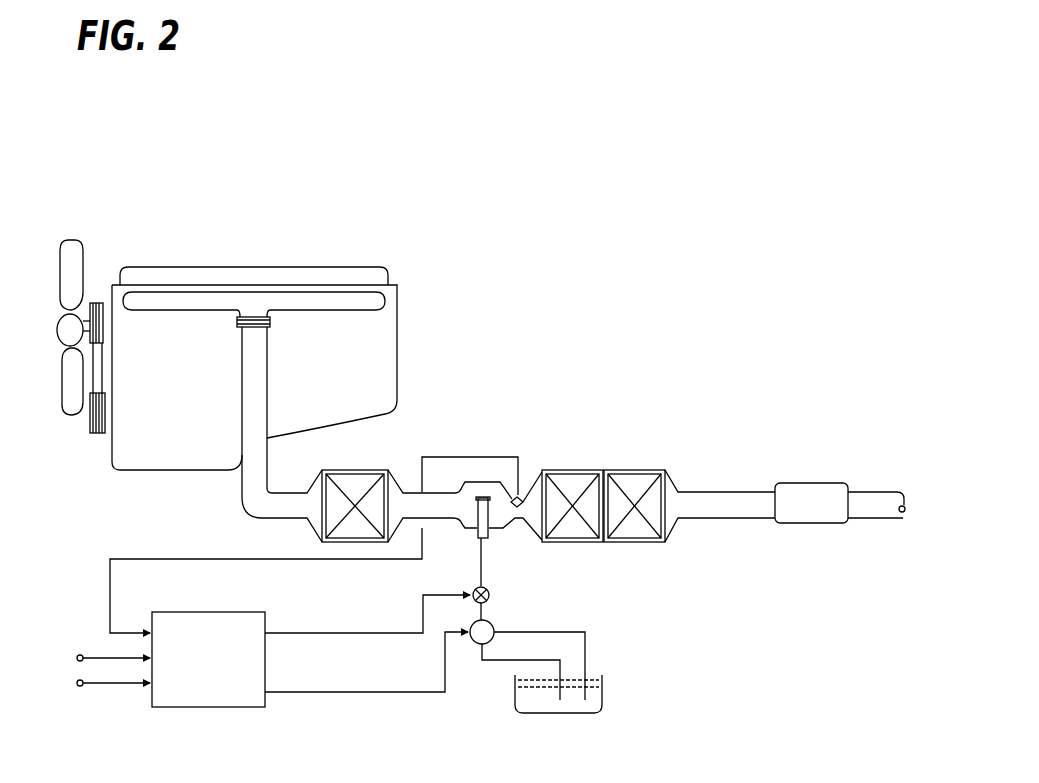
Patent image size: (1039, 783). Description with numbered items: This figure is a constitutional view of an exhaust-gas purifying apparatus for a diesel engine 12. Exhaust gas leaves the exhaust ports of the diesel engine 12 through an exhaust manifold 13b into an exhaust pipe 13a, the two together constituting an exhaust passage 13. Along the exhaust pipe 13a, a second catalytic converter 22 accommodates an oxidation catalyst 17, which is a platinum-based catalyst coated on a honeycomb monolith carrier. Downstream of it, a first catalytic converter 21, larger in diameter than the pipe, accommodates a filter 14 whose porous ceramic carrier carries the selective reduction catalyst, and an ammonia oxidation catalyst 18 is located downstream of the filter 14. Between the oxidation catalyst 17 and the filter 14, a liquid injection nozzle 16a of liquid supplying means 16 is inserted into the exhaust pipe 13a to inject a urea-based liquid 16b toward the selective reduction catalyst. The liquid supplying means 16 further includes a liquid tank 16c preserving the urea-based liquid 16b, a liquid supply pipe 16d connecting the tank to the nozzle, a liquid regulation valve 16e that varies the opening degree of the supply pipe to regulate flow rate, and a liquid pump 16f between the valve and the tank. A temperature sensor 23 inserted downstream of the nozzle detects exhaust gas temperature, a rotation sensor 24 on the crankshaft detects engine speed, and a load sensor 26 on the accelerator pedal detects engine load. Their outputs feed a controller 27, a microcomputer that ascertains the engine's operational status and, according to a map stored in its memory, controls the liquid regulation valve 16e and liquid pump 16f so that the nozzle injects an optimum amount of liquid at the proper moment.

The diesel engine 12 is at (398, 313).
The exhaust passage 13 is at (452, 352).
The exhaust pipe 13a is at (267, 396).
The exhaust manifold 13b is at (337, 310).
The filter 14 is at (577, 464).
The liquid supplying means 16 is at (536, 611).
The liquid injection nozzle 16a is at (477, 508).
The urea-based liquid 16b is at (597, 673).
The liquid tank 16c is at (515, 703).
The liquid supply pipe 16d is at (506, 668).
The liquid regulation valve 16e is at (472, 590).
The liquid pump 16f is at (491, 622).
The oxidation catalyst 17 is at (358, 468).
The ammonia oxidation catalyst 18 is at (625, 466).
The first catalytic converter 21 is at (673, 485).
The second catalytic converter 22 is at (402, 490).
The temperature sensor 23 is at (530, 492).
The rotation sensor 24 is at (77, 656).
The load sensor 26 is at (77, 681).
The controller 27 is at (227, 610).